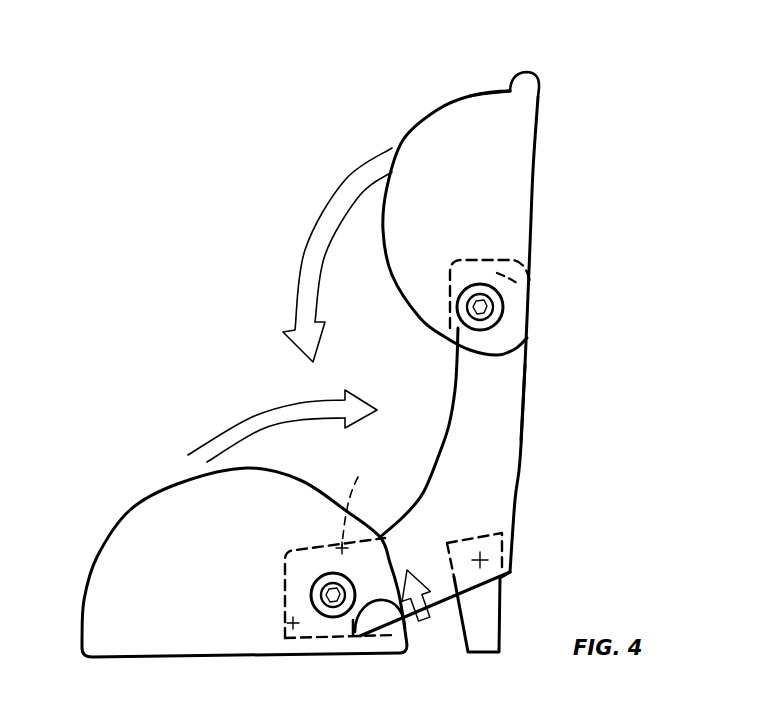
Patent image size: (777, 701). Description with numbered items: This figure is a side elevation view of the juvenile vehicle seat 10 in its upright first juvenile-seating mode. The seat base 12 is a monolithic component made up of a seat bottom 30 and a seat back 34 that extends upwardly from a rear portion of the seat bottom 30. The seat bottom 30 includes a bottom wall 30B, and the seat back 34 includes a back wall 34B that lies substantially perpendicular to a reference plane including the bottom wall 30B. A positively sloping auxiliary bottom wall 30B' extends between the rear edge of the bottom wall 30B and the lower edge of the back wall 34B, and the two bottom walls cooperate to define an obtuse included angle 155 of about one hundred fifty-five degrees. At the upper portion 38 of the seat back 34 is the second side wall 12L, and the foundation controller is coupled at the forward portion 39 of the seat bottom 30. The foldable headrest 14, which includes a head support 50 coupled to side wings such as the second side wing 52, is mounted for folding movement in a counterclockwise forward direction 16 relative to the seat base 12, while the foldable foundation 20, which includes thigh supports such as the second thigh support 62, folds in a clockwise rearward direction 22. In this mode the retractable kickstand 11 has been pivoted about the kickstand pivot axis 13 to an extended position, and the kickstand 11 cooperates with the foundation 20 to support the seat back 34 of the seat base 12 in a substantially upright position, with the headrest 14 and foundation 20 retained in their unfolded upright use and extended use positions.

The juvenile vehicle seat 10 is at (612, 100).
The retractable kickstand 11 is at (485, 618).
The seat base 12 is at (523, 458).
The second side wall 12L is at (462, 443).
The kickstand pivot axis 13 is at (498, 542).
The foldable headrest 14 is at (470, 92).
The counterclockwise forward direction 16 is at (340, 208).
The foldable foundation 20 is at (89, 584).
The clockwise rearward direction 22 is at (287, 415).
The seat bottom 30 is at (358, 502).
The bottom wall 30B is at (349, 615).
The positively sloping auxiliary bottom wall 30B' is at (453, 627).
The seat back 34 is at (480, 384).
The back wall 34B is at (527, 387).
The upper portion of seat back 38 is at (531, 283).
The forward portion of seat bottom 39 is at (305, 621).
The head support 50 is at (525, 75).
The second side wing 52 is at (475, 193).
The second thigh support 62 is at (178, 532).
The obtuse included angle 155 is at (390, 597).